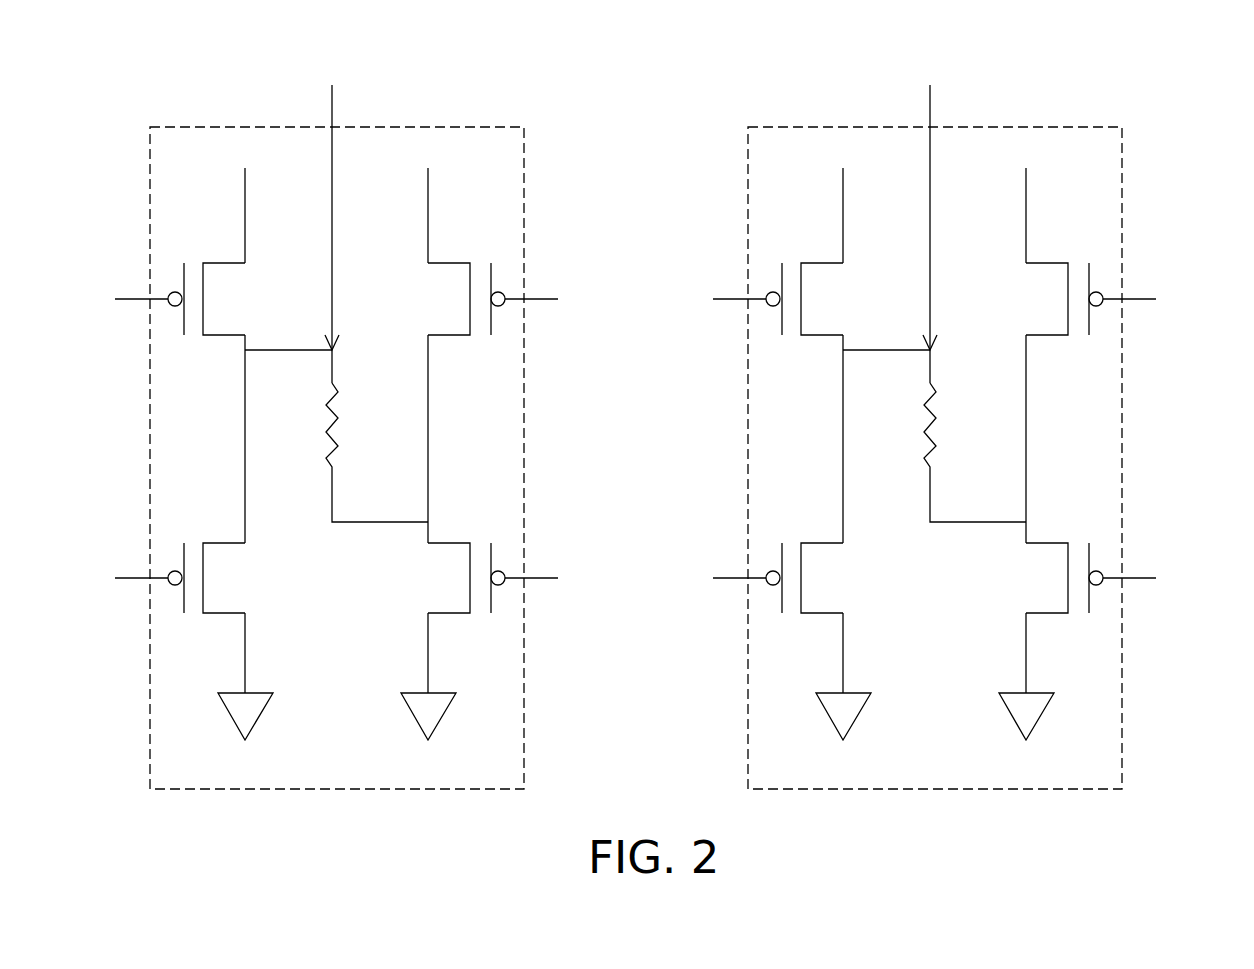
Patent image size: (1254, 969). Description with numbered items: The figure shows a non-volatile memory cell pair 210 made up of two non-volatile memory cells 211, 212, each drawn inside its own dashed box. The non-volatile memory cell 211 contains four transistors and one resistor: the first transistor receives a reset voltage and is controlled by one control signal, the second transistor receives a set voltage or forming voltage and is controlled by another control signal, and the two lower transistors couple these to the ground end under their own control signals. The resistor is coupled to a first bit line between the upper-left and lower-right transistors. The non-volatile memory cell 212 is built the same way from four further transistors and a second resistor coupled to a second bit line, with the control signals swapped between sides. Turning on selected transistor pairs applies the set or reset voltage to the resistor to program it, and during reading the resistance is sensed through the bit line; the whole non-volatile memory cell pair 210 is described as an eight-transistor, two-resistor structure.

The non-volatile memory cell pair 210 is at (1238, 797).
The non-volatile memory cell 211 is at (497, 127).
The non-volatile memory cell 212 is at (940, 412).